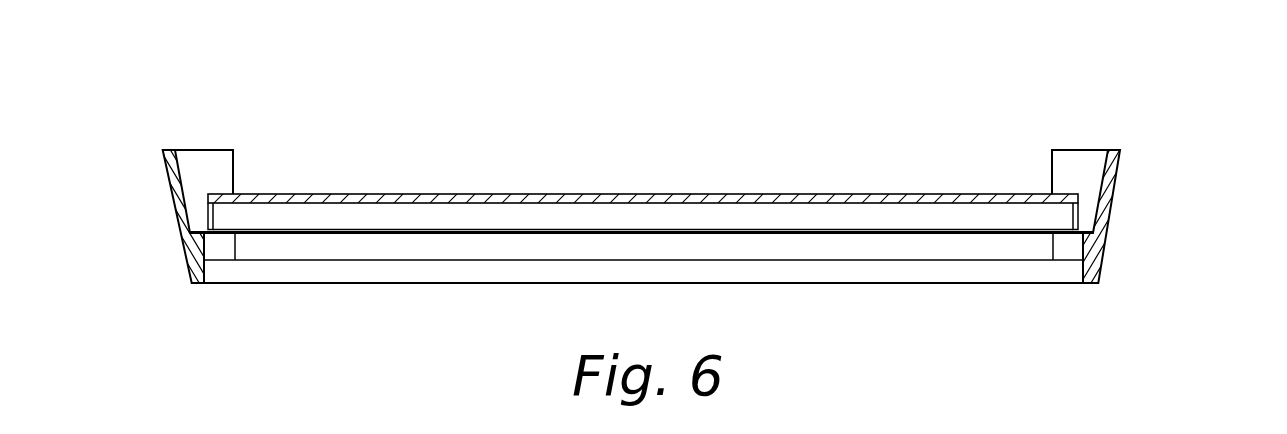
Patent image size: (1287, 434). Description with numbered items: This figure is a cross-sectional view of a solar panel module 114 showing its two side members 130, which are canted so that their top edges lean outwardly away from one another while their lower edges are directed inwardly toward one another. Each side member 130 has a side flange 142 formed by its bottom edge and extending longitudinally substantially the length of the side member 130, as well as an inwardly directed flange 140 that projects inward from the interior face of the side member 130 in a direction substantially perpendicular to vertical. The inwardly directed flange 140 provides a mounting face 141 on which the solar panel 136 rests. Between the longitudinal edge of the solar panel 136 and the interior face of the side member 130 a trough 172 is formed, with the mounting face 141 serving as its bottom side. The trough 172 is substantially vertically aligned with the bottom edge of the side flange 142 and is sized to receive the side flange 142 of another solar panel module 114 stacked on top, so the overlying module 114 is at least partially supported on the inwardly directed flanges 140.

The solar panel module 114 is at (532, 102).
The side member 130 is at (1113, 217).
The solar panel 136 is at (667, 193).
The inwardly directed flange 140 is at (218, 238).
The mounting face 141 is at (1089, 231).
The side flange 142 is at (186, 268).
The trough 172 is at (193, 158).